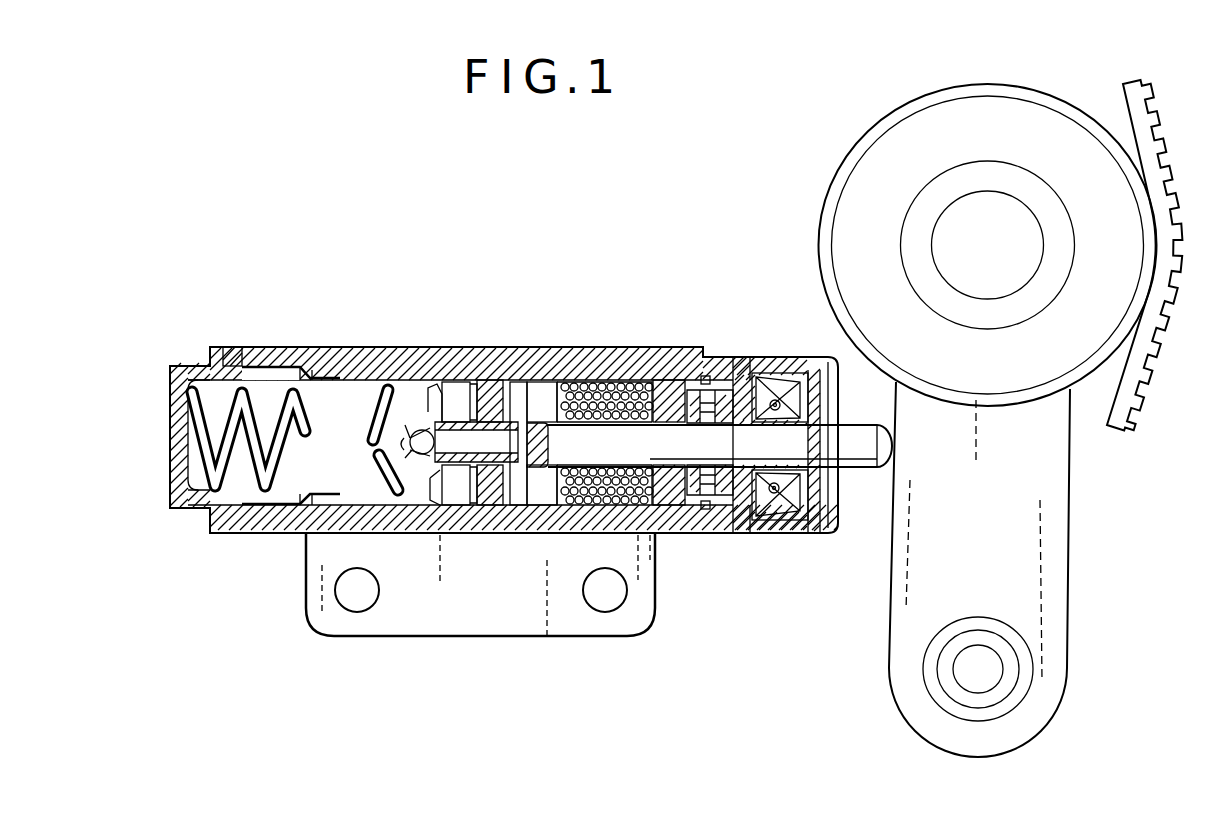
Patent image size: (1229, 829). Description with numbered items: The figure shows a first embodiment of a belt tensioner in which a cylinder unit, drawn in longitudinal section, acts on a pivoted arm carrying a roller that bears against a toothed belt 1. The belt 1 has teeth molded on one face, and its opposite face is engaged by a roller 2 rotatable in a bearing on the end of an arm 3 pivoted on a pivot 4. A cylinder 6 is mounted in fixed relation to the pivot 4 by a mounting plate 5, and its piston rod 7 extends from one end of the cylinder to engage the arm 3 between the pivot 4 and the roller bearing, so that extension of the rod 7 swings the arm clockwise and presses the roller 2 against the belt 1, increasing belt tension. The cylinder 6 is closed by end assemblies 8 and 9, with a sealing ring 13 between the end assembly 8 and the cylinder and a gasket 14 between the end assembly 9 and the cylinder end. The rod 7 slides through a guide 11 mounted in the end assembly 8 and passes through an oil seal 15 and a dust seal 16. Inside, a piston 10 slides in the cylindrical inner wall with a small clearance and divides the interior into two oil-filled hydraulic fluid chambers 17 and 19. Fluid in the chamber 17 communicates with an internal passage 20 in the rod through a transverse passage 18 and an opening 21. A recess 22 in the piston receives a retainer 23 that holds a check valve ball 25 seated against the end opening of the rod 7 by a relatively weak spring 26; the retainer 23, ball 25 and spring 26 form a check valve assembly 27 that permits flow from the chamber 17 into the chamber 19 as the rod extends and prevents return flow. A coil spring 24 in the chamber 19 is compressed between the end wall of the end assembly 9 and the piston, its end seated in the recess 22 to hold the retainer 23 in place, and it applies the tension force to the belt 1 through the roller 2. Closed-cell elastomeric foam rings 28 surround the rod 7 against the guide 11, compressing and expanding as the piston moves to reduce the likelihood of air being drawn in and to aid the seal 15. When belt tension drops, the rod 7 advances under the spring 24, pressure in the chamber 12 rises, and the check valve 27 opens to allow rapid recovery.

The toothed belt 1 is at (1170, 210).
The roller 2 is at (920, 105).
The arm 3 is at (1060, 545).
The pivot 4 is at (990, 672).
The mounting plate 5 is at (528, 638).
The cylinder 6 is at (332, 514).
The piston rod 7 is at (870, 470).
The end assembly 8 is at (780, 356).
The end assembly 9 is at (180, 365).
The piston 10 is at (487, 375).
The guide 11 is at (665, 392).
The chamber 12 is at (530, 503).
The sealing ring 13 is at (705, 375).
The gasket 14 is at (232, 347).
The oil seal 15 is at (722, 505).
The dust seal 16 is at (788, 528).
The hydraulic fluid chamber 17 is at (600, 390).
The transverse passage 18 is at (538, 390).
The hydraulic fluid chamber 19 is at (368, 378).
The internal passage 20 is at (492, 492).
The opening 21 is at (549, 446).
The recess 22 is at (452, 392).
The retainer 23 is at (410, 392).
The coil spring 24 is at (173, 430).
The check valve ball 25 is at (384, 418).
The spring 26 is at (396, 462).
The check valve assembly 27 is at (428, 470).
The closed-cell elastomeric foam rings 28 is at (590, 503).